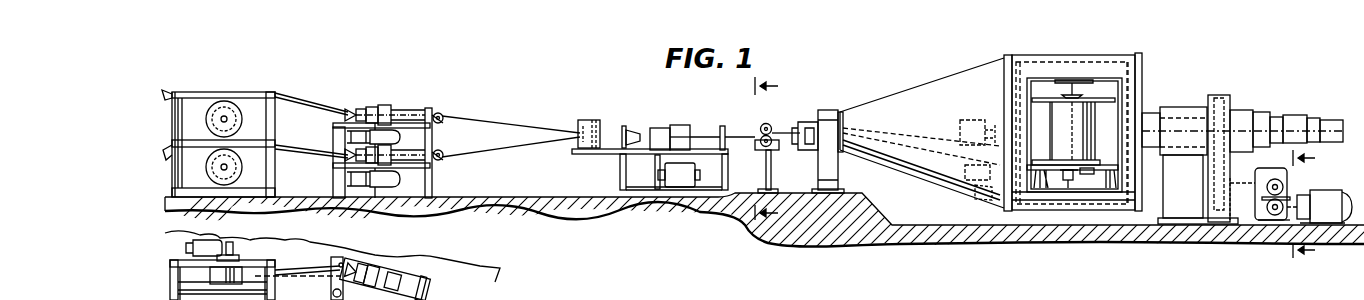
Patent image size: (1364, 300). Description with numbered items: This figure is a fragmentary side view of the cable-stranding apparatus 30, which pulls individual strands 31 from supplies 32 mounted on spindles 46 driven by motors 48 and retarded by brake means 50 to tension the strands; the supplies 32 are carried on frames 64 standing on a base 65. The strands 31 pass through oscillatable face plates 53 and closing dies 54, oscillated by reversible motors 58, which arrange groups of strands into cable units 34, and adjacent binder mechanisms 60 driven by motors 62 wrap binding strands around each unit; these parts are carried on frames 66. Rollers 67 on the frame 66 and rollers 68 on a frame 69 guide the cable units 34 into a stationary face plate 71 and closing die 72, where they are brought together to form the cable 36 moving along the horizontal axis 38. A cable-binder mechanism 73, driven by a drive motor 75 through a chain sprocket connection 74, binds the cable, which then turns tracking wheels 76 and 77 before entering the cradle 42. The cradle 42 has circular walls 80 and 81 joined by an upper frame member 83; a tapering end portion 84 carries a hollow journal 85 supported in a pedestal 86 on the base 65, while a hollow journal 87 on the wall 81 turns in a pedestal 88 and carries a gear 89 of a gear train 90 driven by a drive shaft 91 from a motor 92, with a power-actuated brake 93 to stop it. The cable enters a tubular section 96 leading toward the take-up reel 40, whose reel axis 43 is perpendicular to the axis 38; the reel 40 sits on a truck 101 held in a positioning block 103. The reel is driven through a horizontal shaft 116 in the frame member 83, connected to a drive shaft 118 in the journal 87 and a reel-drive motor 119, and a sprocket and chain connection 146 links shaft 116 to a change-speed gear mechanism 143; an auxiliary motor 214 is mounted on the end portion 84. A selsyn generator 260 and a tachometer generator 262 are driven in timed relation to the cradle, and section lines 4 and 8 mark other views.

The cable-stranding apparatus 30 is at (1290, 47).
The strands 31 is at (180, 100).
The supplies 32 is at (224, 101).
The cable units 34 is at (512, 122).
The cable 36 is at (730, 126).
The horizontal axis 38 is at (660, 128).
The take-up reel 40 is at (1052, 112).
The cradle 42 is at (990, 64).
The reel axis 43 is at (1090, 118).
The spindles 46 is at (232, 242).
The motors 48 is at (193, 247).
The brake means 50 is at (240, 257).
The oscillatable face plates 53 is at (346, 108).
The closing dies 54 is at (352, 108).
The reversible motors 58 is at (347, 132).
The binder mechanisms 60 is at (386, 105).
The motors 62 is at (386, 125).
The frames 64 is at (272, 92).
The base 65 is at (548, 197).
The frames 66 is at (412, 123).
The rollers 67 is at (443, 121).
The rollers 68 is at (586, 120).
The frame 69 is at (604, 154).
The stationary face plate 71 is at (623, 126).
The closing die 72 is at (630, 130).
The cable-binder mechanism 73 is at (684, 125).
The chain sprocket connection 74 is at (655, 156).
The drive motor 75 is at (680, 187).
The tracking wheel 76 is at (769, 123).
The tracking wheel 77 is at (766, 160).
The circular wall 80 is at (1008, 55).
The circular wall 81 is at (1140, 53).
The upper frame member 83 is at (1105, 58).
The tapering end portion 84 is at (930, 180).
The hollow journal 85 is at (830, 110).
The pedestal 86 is at (838, 176).
The hollow journal 87 is at (1172, 107).
The pedestal 88 is at (1178, 224).
The gear 89 is at (1218, 95).
The gear train 90 is at (1214, 165).
The drive shaft 91 is at (1233, 225).
The motor 92 is at (1325, 192).
The power-actuated brake 93 is at (1278, 220).
The tubular section 96 is at (943, 155).
The truck 101 is at (1085, 178).
The positioning block 103 is at (1070, 185).
The horizontal shaft 116 is at (1043, 62).
The drive shaft 118 is at (1245, 110).
The reel-drive motor 119 is at (1292, 115).
The change-speed gear mechanism 143 is at (978, 120).
The sprocket and chain connection 146 is at (995, 112).
The motor 214 is at (970, 201).
The selsyn generator 260 is at (1255, 178).
The tachometer generator 262 is at (1262, 172).
The section line 4 is at (778, 151).
The section line 8 is at (1312, 203).